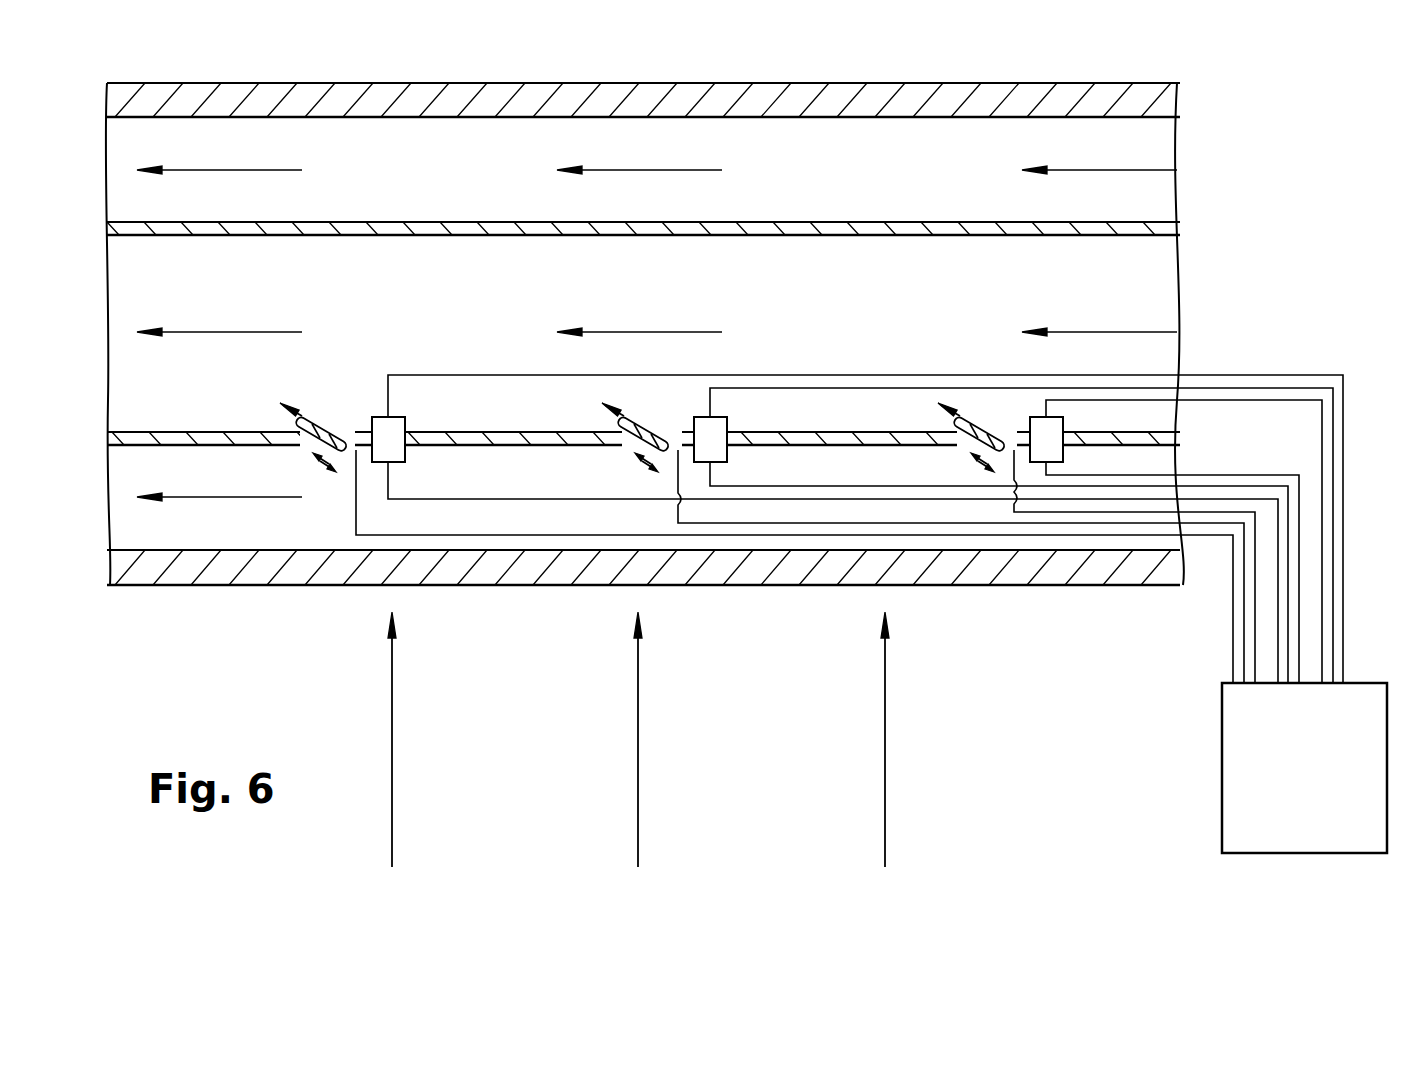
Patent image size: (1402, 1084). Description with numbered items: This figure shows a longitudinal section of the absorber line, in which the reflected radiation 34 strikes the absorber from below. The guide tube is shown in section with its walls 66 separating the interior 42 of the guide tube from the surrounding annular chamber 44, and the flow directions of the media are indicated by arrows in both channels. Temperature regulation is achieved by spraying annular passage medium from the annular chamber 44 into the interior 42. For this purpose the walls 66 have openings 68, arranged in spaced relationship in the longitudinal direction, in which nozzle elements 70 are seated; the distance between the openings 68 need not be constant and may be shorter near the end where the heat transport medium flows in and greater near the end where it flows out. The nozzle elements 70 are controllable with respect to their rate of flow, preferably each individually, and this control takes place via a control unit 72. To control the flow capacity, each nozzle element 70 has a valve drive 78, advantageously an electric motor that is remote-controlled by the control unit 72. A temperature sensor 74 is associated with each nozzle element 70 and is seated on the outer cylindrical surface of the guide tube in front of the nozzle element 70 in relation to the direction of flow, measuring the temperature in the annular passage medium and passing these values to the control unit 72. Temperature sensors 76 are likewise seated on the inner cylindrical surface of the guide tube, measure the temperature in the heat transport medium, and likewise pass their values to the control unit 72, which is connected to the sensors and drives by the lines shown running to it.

The radiation 34 is at (638, 786).
The interior 42 is at (625, 275).
The annular chamber 44 is at (833, 162).
The walls 66 is at (432, 225).
The openings 68 is at (972, 432).
The nozzle elements 70 is at (318, 422).
The control unit 72 is at (1283, 777).
The temperature sensor 74 is at (1040, 455).
The temperature sensors 76 is at (1040, 420).
The valve drive 78 is at (350, 432).